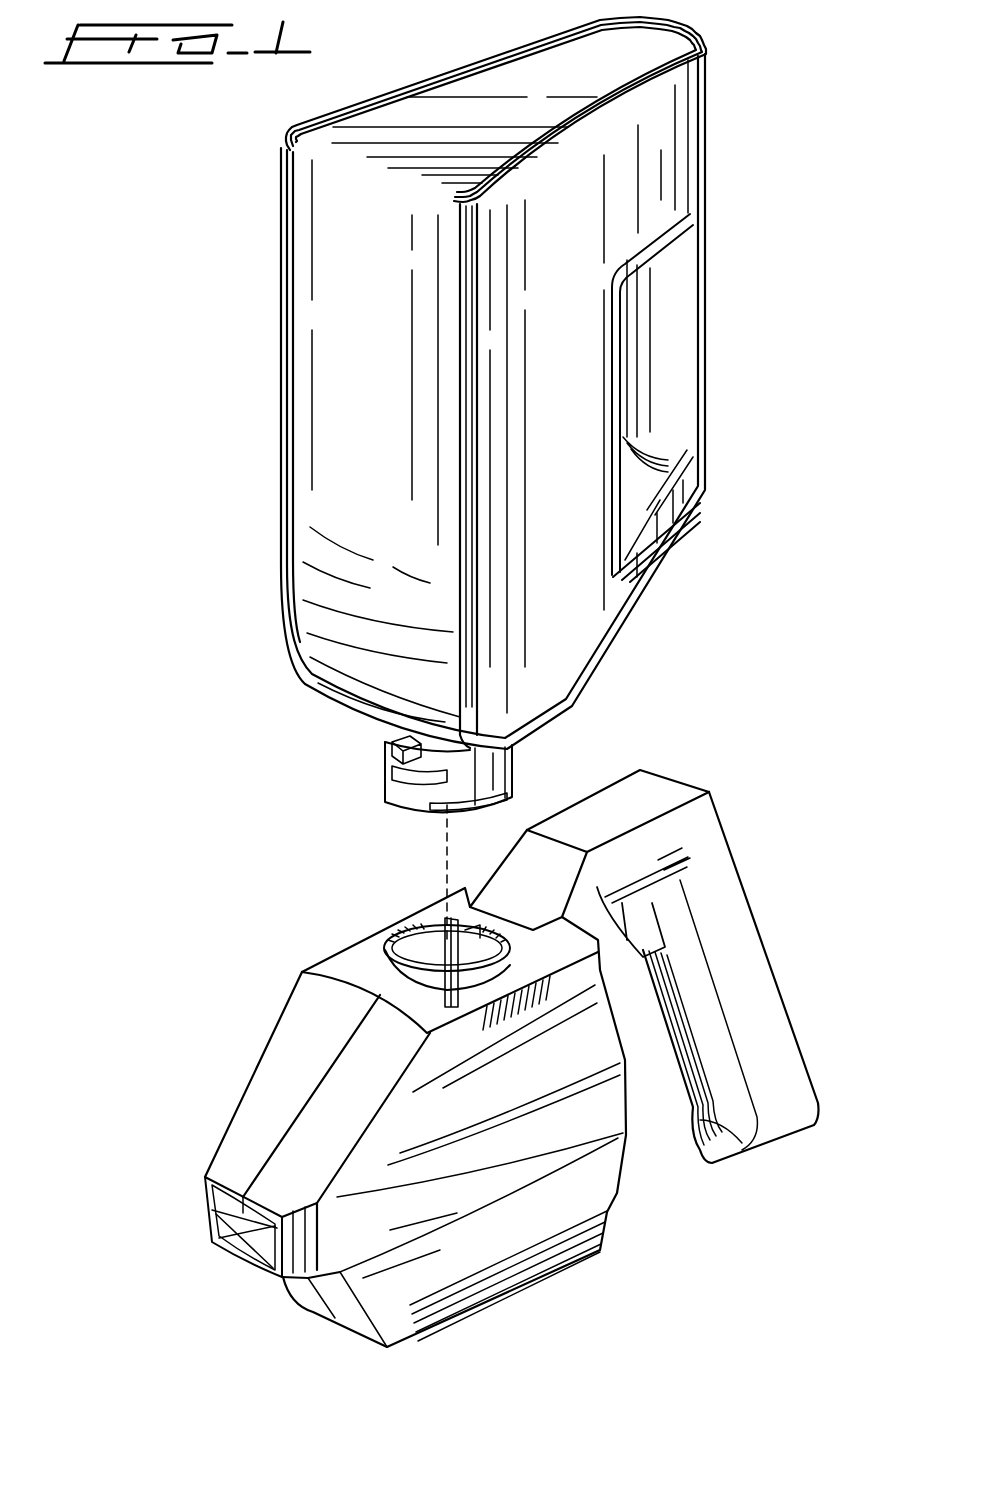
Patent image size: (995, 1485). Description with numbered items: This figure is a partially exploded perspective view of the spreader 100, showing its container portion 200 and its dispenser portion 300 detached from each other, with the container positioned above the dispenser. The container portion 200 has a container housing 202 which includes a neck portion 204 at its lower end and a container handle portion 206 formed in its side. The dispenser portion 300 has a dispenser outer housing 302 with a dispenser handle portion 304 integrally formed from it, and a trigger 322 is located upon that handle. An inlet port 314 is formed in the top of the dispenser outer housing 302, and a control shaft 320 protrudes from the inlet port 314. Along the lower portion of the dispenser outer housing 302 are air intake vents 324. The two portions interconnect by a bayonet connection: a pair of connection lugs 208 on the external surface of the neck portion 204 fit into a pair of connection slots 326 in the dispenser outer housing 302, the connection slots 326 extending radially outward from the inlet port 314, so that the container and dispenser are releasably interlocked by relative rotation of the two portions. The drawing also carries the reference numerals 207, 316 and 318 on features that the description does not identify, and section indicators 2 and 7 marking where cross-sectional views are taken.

The spreader 100 is at (193, 730).
The container portion 200 is at (483, 414).
The container housing 202 is at (281, 330).
The neck portion 204 is at (387, 747).
The container handle portion 206 is at (685, 290).
The container closure 207 is at (513, 782).
The connection lugs 208 is at (385, 770).
The dispenser portion 300 is at (477, 1058).
The dispenser outer housing 302 is at (330, 952).
The dispenser handle portion 304 is at (743, 960).
The inlet port 314 is at (400, 935).
The outlet 316 is at (247, 1233).
The nozzle 318 is at (213, 1217).
The control shaft 320 is at (432, 935).
The trigger 322 is at (630, 913).
The air intake vents 324 is at (573, 1250).
The connection slots 326 is at (467, 940).
The section line 2- 2 is at (788, 907).
The section line 7- 7 is at (290, 722).